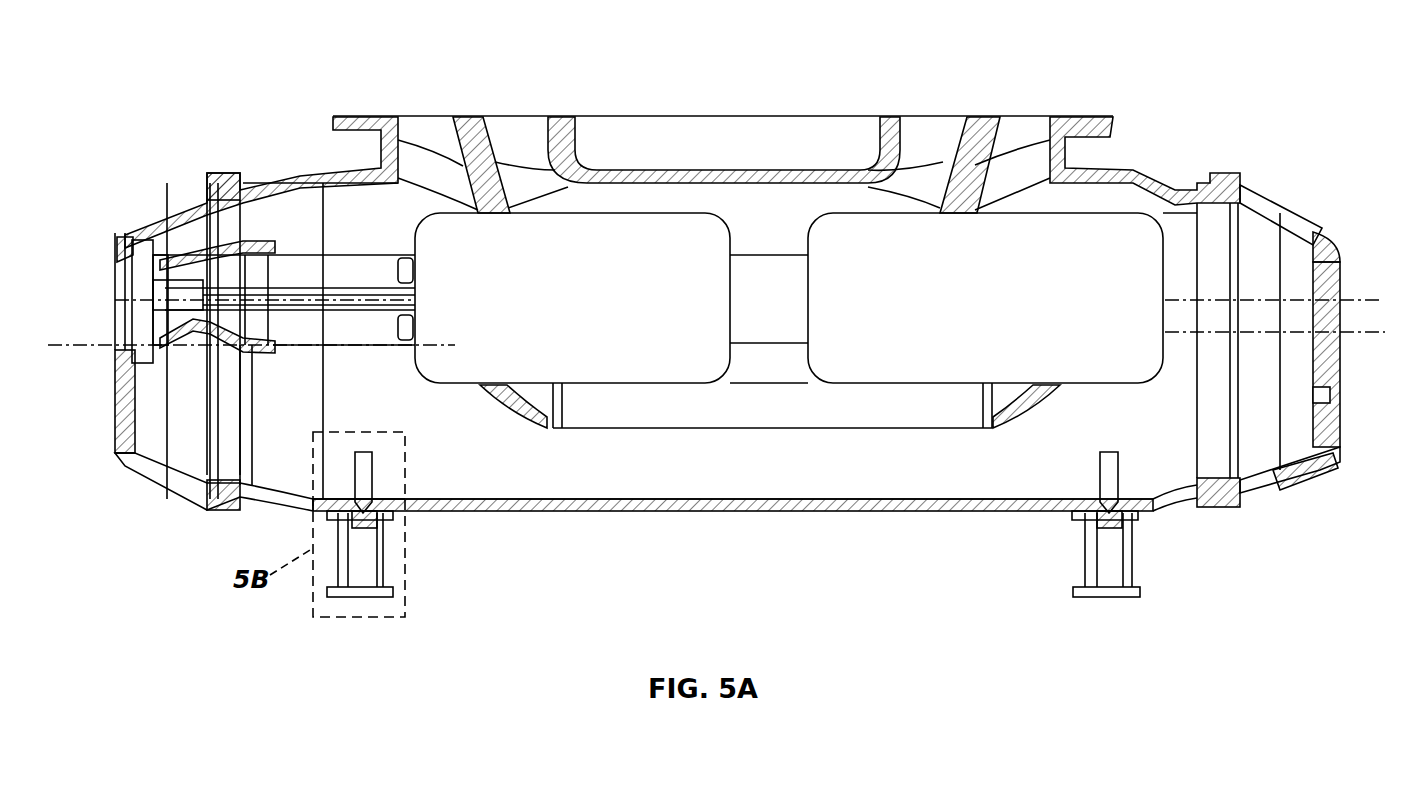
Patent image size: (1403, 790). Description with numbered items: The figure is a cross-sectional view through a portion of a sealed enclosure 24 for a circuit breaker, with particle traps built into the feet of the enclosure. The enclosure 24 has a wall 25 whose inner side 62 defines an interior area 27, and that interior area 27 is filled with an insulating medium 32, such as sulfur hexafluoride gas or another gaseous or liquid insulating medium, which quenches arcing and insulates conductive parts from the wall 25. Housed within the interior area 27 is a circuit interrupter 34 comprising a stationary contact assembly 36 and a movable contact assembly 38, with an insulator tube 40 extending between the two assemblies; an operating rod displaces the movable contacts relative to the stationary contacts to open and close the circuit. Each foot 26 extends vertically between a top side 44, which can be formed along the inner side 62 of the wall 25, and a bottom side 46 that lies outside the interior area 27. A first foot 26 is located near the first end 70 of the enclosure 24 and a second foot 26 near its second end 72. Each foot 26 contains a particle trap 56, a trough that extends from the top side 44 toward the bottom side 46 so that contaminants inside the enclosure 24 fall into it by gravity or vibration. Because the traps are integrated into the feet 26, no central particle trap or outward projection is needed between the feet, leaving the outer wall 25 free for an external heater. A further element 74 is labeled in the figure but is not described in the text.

The enclosure 24 is at (818, 172).
The wall 25 is at (718, 512).
The foot 26 is at (380, 525).
The interior area 27 is at (878, 463).
The insulating medium 32 is at (755, 195).
The circuit interrupter 34 is at (667, 212).
The stationary contact assembly 36 is at (1100, 212).
The movable contact assembly 38 is at (620, 212).
The insulator tube 40 is at (90, 344).
The top side 44 is at (375, 497).
The bottom side 46 is at (375, 520).
The particle trap 56 is at (375, 470).
The inner side 62 is at (598, 497).
The first end 70 is at (1177, 186).
The second end 72 is at (292, 172).
The plate surface 74 is at (830, 512).